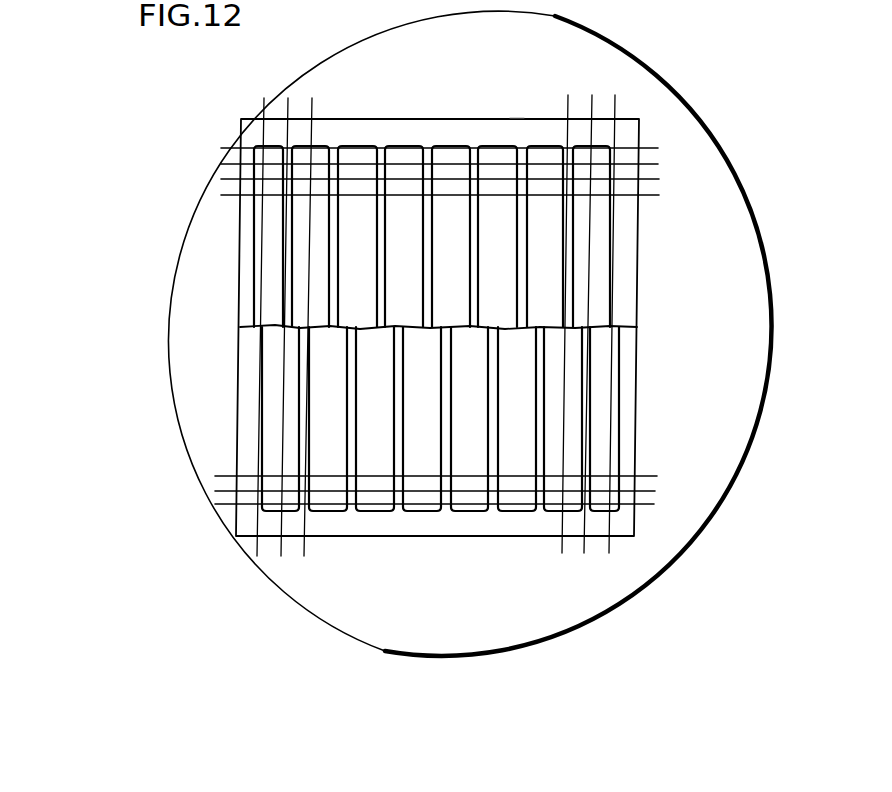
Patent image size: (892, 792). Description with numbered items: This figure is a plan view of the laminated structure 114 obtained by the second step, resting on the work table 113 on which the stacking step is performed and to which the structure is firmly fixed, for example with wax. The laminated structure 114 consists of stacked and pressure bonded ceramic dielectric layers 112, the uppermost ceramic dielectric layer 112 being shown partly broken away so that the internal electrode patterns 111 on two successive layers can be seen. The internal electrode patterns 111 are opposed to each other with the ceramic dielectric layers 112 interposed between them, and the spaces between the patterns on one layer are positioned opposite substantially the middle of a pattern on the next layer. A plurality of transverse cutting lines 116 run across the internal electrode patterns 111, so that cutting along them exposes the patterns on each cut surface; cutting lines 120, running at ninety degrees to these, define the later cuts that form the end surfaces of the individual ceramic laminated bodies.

The internal electrode pattern 111 is at (448, 150).
The ceramic dielectric layer 112 is at (637, 287).
The work table 113 is at (673, 82).
The laminated structure 114 is at (520, 108).
The transverse cutting line 116 is at (645, 195).
The cutting line 120 is at (312, 100).